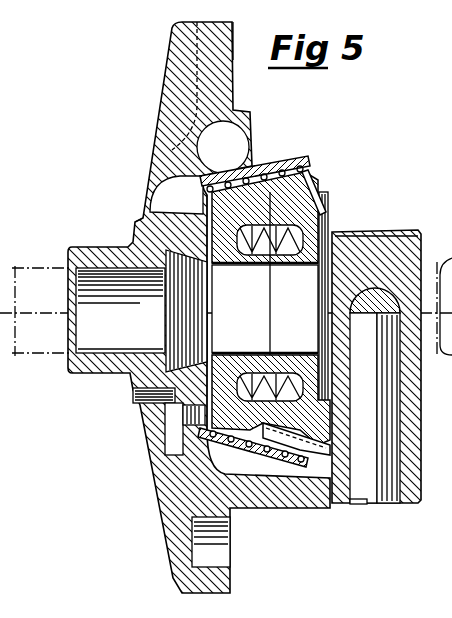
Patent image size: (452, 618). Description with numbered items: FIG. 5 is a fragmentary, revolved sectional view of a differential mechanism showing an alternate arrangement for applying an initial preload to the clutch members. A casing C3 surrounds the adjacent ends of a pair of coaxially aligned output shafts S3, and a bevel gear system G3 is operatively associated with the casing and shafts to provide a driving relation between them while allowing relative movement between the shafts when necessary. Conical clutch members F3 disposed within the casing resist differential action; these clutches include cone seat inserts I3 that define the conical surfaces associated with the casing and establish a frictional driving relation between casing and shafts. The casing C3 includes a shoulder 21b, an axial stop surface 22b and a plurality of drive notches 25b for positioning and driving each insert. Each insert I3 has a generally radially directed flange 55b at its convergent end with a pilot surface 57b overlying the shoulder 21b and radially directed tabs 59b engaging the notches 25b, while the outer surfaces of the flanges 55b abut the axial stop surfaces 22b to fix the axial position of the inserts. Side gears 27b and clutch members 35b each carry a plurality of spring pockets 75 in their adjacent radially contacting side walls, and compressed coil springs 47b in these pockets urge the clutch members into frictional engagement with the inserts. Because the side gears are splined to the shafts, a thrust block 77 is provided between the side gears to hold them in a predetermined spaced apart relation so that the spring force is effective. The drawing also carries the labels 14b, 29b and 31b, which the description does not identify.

The flange 14b is at (238, 41).
The casing C3 is at (173, 60).
The conical clutch member F3 is at (276, 160).
The spring pocket 75 is at (305, 182).
The compressed coil spring 47b is at (320, 204).
The side gear 27b is at (322, 228).
The thrust block 77 is at (381, 372).
The radial flange 55b is at (200, 180).
The axial stop surface 22b is at (210, 192).
The pilot surface 57b is at (140, 215).
The shoulder 21b is at (143, 228).
The output shaft S3 is at (18, 262).
The drive notch 25b is at (195, 403).
The radially directed tab 59b is at (200, 423).
The cone seat insert I3 is at (205, 432).
The clutch member 35b is at (257, 440).
The bevel gear system G3 is at (308, 437).
The recess 29b is at (343, 503).
The bushing 31b is at (372, 493).